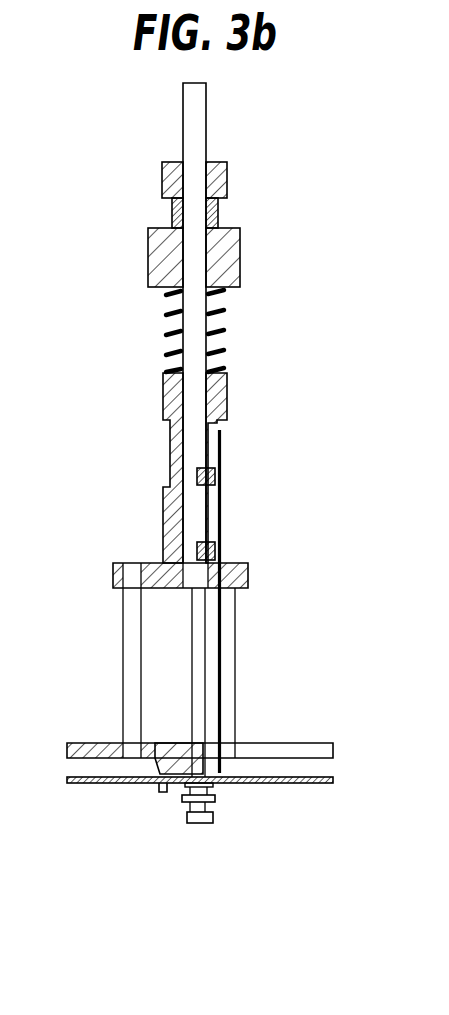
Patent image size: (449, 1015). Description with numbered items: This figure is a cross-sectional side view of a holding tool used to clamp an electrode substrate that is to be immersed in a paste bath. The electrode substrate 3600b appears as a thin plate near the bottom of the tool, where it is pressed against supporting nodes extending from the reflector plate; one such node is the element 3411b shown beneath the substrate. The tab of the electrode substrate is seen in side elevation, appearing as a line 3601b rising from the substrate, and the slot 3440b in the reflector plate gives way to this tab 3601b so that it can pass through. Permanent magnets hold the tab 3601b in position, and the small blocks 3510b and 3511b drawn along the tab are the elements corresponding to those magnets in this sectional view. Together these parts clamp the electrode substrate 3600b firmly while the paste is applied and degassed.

The upper stop collar 3510b is at (218, 470).
The lower stop collar 3511b is at (218, 552).
The tab 3601b is at (217, 710).
The slot 3440b is at (322, 748).
The electrode substrate 3600b is at (105, 784).
The latch member 3411b is at (161, 790).